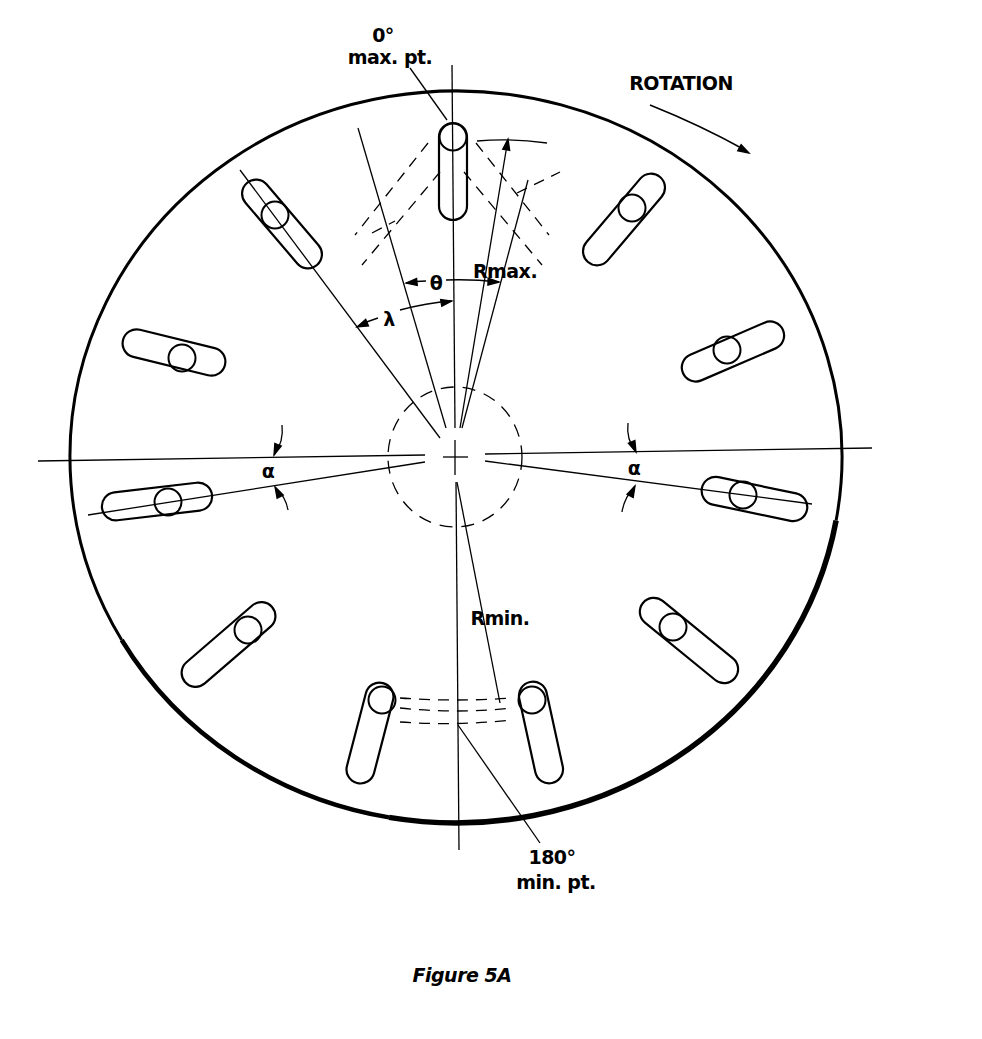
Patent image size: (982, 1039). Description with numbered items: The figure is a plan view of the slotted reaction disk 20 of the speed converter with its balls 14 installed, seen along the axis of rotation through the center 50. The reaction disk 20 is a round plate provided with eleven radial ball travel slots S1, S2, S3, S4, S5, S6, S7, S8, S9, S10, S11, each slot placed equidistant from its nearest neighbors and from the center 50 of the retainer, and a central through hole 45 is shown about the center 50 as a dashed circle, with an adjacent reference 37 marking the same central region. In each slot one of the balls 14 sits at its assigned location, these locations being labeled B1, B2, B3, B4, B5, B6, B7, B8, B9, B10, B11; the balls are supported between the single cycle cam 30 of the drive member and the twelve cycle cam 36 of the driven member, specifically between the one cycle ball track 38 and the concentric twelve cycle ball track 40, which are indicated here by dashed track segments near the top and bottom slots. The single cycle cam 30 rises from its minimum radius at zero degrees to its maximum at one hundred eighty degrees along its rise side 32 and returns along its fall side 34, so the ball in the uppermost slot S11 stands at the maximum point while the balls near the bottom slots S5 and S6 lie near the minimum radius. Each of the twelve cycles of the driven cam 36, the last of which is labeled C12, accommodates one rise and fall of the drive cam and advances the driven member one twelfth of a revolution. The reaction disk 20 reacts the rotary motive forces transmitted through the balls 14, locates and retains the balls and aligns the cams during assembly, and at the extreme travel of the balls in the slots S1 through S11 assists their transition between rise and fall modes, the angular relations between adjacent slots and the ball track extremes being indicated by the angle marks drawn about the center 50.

The balls 14 is at (485, 97).
The reaction disk 20 is at (188, 196).
The single cycle cam 30 is at (427, 785).
The rise side 32 is at (186, 720).
The fall side 34 is at (746, 702).
The 12 cycle cam 36 is at (409, 175).
The hub bore 37 is at (498, 487).
The one cycle ball track 38 is at (407, 720).
The concentric 12 cycle ball track 40 is at (435, 175).
The through hole 45 is at (461, 474).
The center 50 is at (458, 454).
The cam cycle C12 is at (397, 278).
The ball location B1 is at (291, 209).
The ball location B2 is at (190, 346).
The ball location B3 is at (148, 492).
The ball location B4 is at (231, 624).
The ball location B5 is at (360, 708).
The ball location B6 is at (558, 708).
The ball location B7 is at (696, 622).
The ball location B8 is at (756, 483).
The ball location B9 is at (727, 336).
The ball location B10 is at (615, 197).
The ball location B11 is at (485, 131).
The radial ball travel slot S1 is at (281, 238).
The radial ball travel slot S2 is at (191, 358).
The radial ball travel slot S3 is at (169, 511).
The radial ball travel slot S4 is at (243, 644).
The radial ball travel slot S5 is at (372, 722).
The radial ball travel slot S6 is at (540, 721).
The radial ball travel slot S7 is at (675, 640).
The radial ball travel slot S8 is at (740, 498).
The radial ball travel slot S9 is at (718, 351).
The radial ball travel slot S10 is at (623, 233).
The radial ball travel slot S11 is at (457, 188).